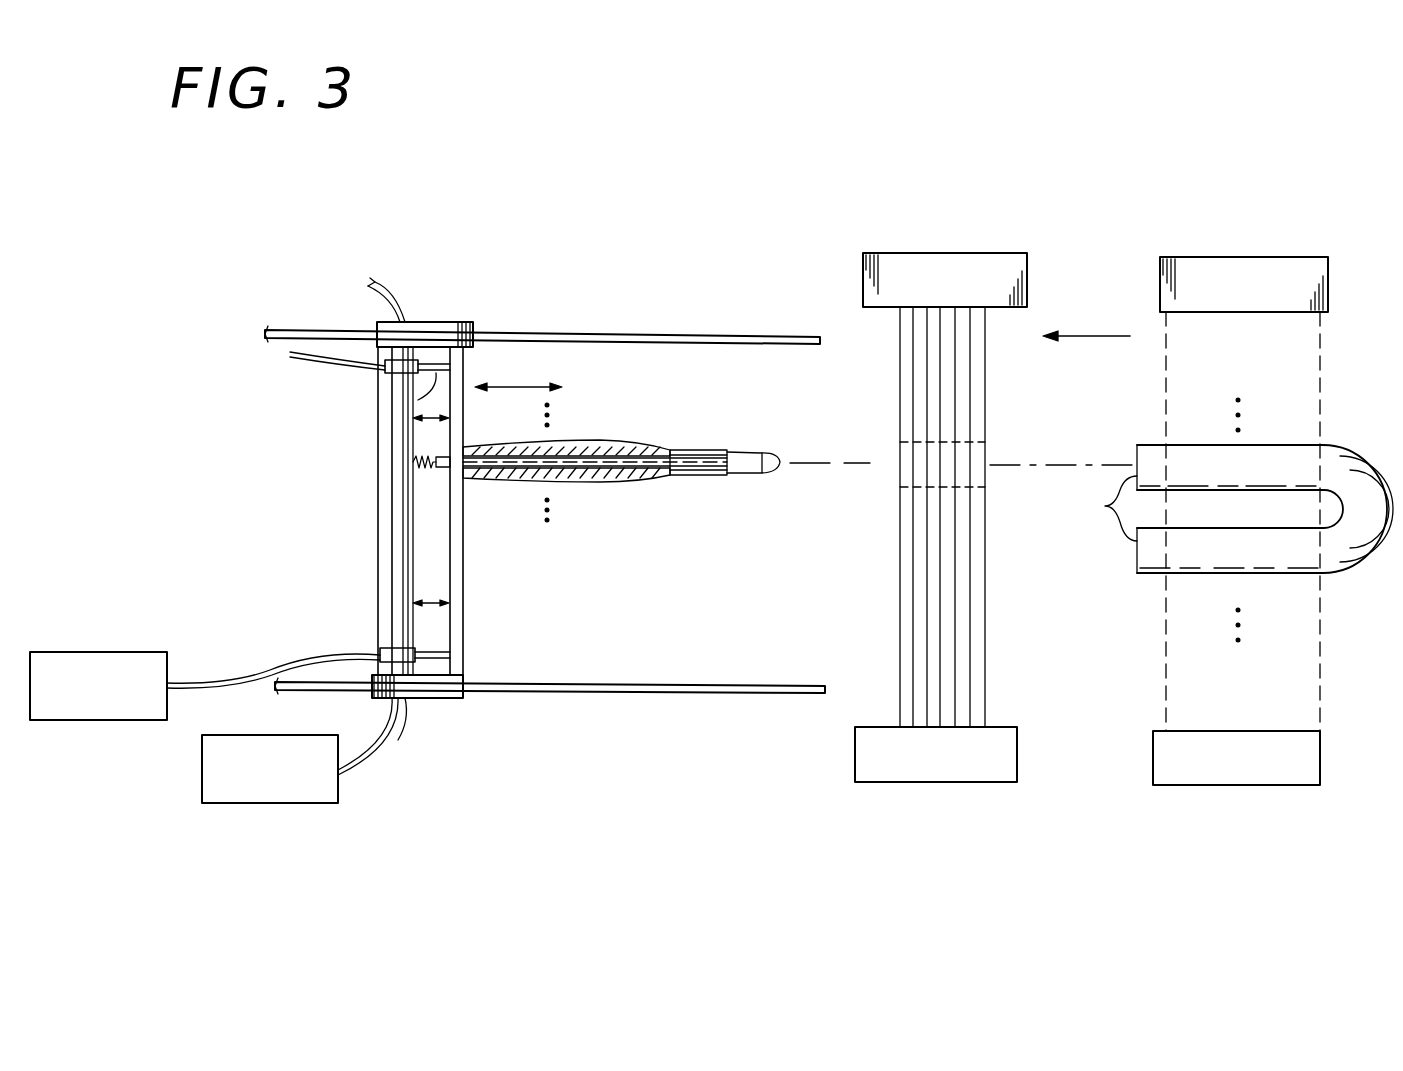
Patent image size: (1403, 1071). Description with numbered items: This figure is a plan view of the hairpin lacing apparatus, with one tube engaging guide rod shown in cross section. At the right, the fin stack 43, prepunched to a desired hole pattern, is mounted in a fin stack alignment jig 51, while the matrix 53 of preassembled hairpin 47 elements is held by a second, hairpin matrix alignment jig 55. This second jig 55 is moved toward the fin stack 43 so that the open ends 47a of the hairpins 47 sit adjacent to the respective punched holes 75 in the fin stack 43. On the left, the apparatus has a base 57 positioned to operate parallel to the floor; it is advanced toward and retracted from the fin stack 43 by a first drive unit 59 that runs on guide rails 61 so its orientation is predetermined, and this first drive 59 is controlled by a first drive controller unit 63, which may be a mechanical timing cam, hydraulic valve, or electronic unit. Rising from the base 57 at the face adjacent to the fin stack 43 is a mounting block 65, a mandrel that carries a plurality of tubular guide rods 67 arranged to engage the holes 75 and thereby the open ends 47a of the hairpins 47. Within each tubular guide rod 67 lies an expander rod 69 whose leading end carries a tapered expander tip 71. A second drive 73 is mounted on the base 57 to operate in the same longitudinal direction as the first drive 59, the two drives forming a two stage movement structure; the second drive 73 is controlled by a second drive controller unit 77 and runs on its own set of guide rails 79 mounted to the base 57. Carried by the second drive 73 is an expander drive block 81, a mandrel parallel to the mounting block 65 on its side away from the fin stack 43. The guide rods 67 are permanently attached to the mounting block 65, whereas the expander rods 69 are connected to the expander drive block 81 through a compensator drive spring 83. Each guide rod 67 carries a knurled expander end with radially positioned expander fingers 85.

The fin stack 43 is at (985, 657).
The hairpin 47 is at (1265, 509).
The open ends 47a is at (1085, 508).
The fin stack alignment jig 51 is at (965, 262).
The matrix 53 is at (1322, 375).
The hairpin matrix alignment jig 55 is at (1262, 265).
The base 57 is at (440, 572).
The first drive unit 59 is at (447, 332).
The guide rails 61 is at (622, 333).
The first drive controller unit 63 is at (278, 805).
The mounting block 65 is at (580, 366).
The tubular guide rods 67 is at (568, 445).
The expander rod 69 is at (622, 462).
The tapered expander tip 71 is at (765, 473).
The second drive 73 is at (405, 360).
The holes 75 is at (987, 447).
The second drive controller unit 77 is at (118, 722).
The guide rails 79 is at (418, 398).
The expander drive block 81 is at (390, 552).
The compensator drive spring 83 is at (412, 462).
The expander fingers 85 is at (707, 483).